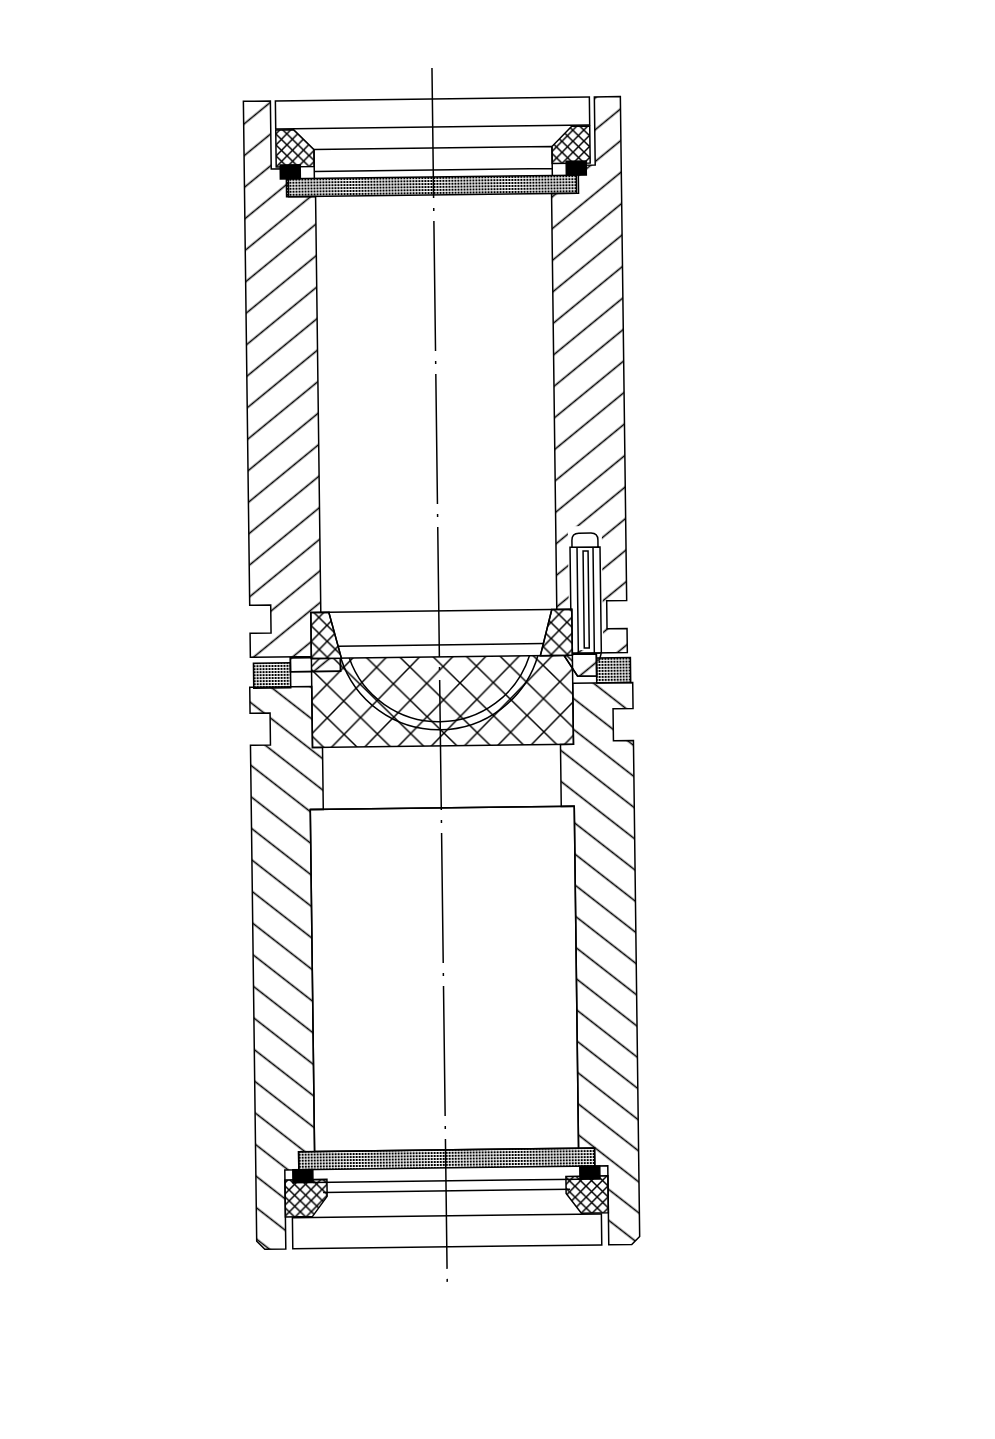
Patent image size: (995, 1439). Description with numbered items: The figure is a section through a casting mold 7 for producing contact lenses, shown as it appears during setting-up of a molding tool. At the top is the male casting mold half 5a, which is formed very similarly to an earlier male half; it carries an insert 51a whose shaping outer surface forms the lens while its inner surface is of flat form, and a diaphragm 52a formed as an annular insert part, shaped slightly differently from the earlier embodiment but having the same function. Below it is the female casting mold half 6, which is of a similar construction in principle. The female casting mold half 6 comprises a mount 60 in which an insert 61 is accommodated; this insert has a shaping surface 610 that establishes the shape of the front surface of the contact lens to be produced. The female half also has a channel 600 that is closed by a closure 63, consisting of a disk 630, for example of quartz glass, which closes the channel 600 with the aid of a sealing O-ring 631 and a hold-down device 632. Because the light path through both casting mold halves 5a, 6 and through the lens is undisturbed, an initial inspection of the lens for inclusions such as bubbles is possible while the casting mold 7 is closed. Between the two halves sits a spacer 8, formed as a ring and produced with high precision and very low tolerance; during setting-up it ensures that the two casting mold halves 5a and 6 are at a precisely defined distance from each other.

The casting mold 7 is at (138, 224).
The male casting mold half 5a is at (690, 252).
The insert 51a is at (364, 656).
The diaphragm 52a is at (548, 646).
The spacer 8 is at (634, 672).
The insert 61 is at (380, 677).
The shaping surface 610 is at (397, 727).
The female casting mold half 6 is at (523, 1016).
The mount 60 is at (628, 1004).
The channel 600 is at (540, 1007).
The disk 630 is at (492, 1150).
The sealing O-ring 631 is at (600, 1173).
The hold-down device 632 is at (588, 1204).
The closure 63 is at (314, 1227).